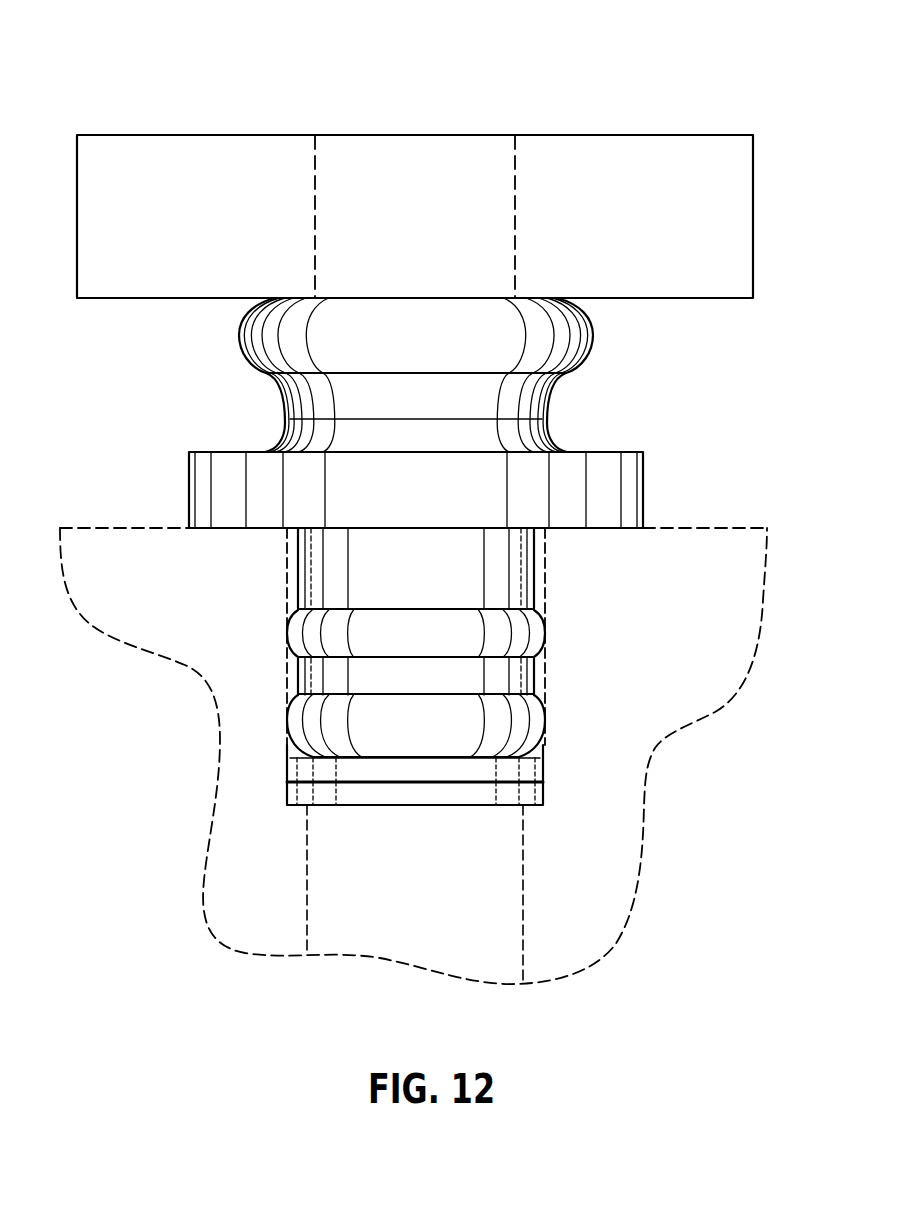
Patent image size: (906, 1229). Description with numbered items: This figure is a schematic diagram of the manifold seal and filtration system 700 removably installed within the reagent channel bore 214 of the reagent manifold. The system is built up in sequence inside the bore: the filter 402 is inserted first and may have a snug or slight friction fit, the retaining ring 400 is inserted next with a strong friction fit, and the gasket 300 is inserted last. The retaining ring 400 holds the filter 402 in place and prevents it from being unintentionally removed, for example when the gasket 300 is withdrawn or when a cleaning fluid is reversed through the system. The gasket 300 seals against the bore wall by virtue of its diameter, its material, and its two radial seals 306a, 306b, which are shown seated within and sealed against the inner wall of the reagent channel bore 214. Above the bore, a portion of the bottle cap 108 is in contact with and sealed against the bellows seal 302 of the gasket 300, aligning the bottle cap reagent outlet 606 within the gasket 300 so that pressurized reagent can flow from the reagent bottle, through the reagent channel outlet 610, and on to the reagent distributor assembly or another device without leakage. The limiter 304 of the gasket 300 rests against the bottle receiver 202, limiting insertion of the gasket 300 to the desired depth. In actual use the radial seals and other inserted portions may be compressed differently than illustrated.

The manifold seal and filtration system 700 is at (106, 58).
The bottle cap 108 is at (695, 130).
The bottle cap reagent outlet 606 is at (412, 217).
The bottle receiver 202 is at (107, 527).
The reagent channel bore 214 is at (288, 576).
The reagent channel outlet 610 is at (198, 763).
The gasket 300 is at (618, 391).
The bellows seal 302 is at (584, 338).
The limiter 304 is at (638, 484).
The radial seal 306a is at (528, 630).
The radial seal 306b is at (525, 718).
The retaining ring 400 is at (525, 768).
The filter 402 is at (525, 797).